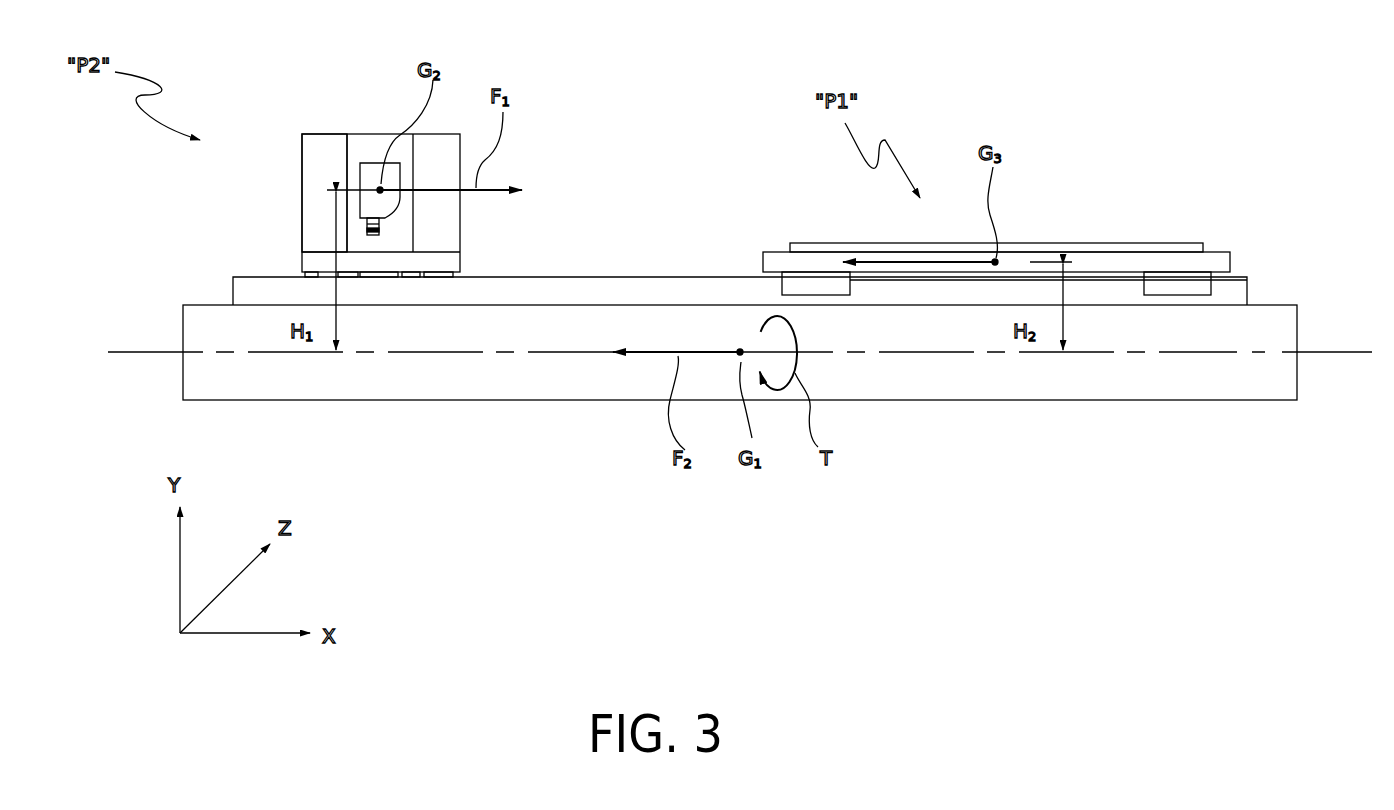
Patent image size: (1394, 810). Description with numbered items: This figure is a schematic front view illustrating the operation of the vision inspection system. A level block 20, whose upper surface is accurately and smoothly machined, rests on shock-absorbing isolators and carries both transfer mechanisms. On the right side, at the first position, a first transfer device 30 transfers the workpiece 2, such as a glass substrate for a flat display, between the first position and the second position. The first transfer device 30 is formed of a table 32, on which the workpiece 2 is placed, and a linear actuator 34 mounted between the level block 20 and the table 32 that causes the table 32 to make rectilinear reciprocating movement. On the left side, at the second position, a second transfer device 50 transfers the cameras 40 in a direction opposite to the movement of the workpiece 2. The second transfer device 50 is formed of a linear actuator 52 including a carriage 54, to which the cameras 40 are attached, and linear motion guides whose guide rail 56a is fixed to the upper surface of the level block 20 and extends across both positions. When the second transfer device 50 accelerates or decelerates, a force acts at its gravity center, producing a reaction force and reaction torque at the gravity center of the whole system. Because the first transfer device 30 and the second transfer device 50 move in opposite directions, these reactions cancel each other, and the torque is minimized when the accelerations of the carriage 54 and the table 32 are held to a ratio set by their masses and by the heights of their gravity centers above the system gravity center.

The workpiece 2 is at (1060, 250).
The level block 20 is at (198, 329).
The first transfer device 30 is at (638, 278).
The table 32 is at (1140, 260).
The linear actuator 34 is at (685, 278).
The cameras 40 is at (373, 178).
The second transfer device 50 is at (317, 135).
The linear actuator 52 is at (372, 133).
The carriage 54 is at (317, 152).
The guide rail 56a is at (300, 274).